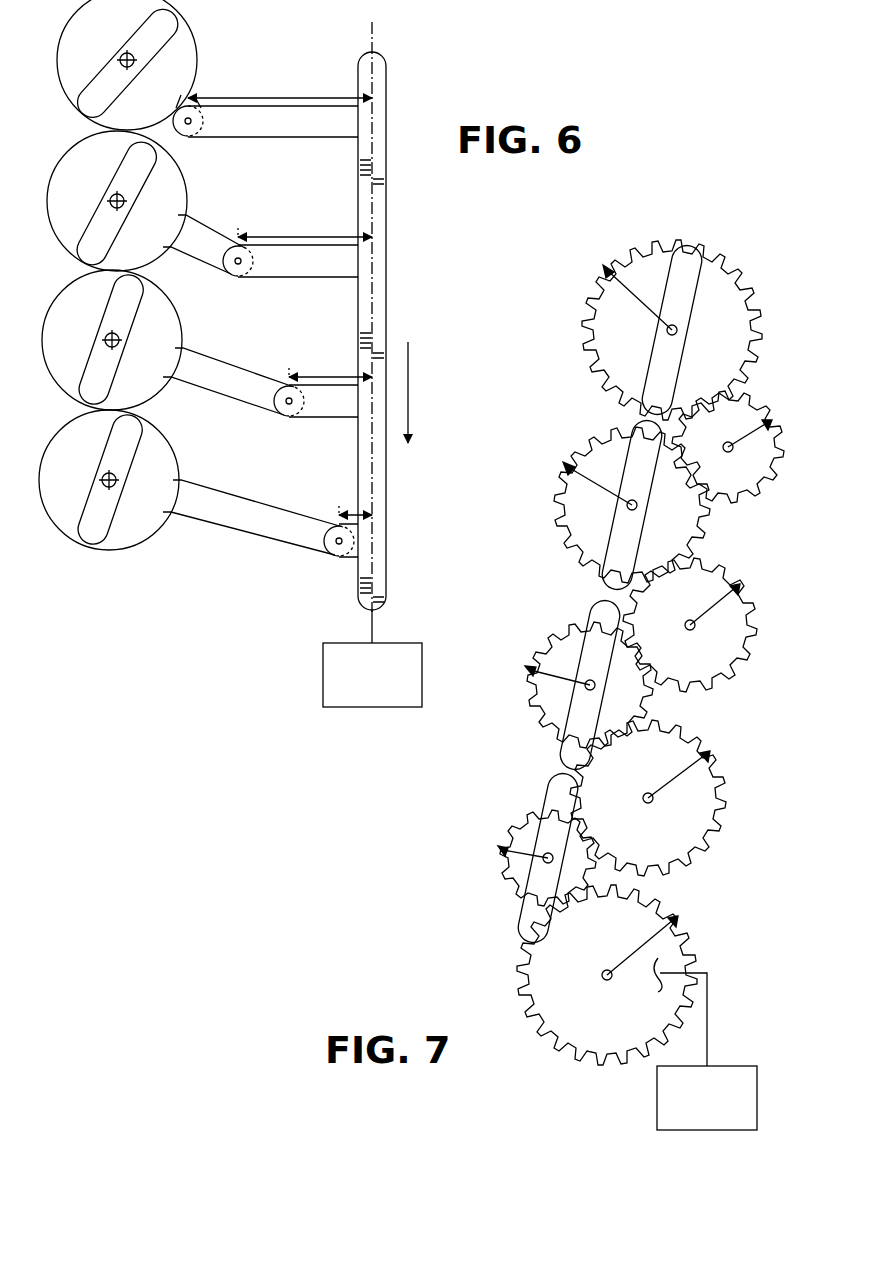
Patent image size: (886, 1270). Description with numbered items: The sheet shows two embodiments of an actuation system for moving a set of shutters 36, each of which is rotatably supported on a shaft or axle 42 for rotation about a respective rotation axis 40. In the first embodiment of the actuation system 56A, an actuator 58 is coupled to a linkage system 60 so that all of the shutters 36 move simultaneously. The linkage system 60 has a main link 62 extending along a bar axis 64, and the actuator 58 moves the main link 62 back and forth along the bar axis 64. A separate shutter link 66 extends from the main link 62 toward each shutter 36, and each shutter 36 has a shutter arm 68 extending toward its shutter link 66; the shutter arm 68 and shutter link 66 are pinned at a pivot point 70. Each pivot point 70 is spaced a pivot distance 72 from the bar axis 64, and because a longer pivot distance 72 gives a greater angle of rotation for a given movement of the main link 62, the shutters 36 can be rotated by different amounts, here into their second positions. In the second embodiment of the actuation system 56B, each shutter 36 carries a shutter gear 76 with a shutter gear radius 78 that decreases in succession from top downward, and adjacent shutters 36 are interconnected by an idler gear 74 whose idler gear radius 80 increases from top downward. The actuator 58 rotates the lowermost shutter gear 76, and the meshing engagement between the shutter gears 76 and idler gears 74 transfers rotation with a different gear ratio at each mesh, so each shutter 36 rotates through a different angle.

In FIG. 6, the shutter 36 is at (108, 62).
In FIG. 7, the shutter 36 is at (662, 372).
In FIG. 6, the rotation axis 40 is at (122, 52).
In FIG. 6, the shaft or axle 42 is at (118, 70).
In FIG. 7, the shaft or axle 42 is at (664, 337).
In FIG. 6, the first embodiment of the actuation system 56A is at (412, 78).
In FIG. 7, the second embodiment of the actuation system 56B is at (717, 228).
In FIG. 6, the actuator 58 is at (422, 665).
In FIG. 7, the actuator 58 is at (757, 1087).
In FIG. 6, the linkage system 60 is at (408, 312).
In FIG. 6, the main link 62 is at (388, 302).
In FIG. 6, the bar axis 64 is at (380, 40).
In FIG. 6, the shutter link 66 is at (295, 137).
In FIG. 6, the shutter arm 68 is at (186, 94).
In FIG. 6, the pivot point 70 is at (188, 125).
In FIG. 6, the pivot distance 72 is at (278, 98).
In FIG. 7, the idler gear 74 is at (753, 405).
In FIG. 7, the shutter gear 76 is at (618, 262).
In FIG. 7, the shutter gear radius 78 is at (640, 310).
In FIG. 7, the idler gear radius 80 is at (772, 450).